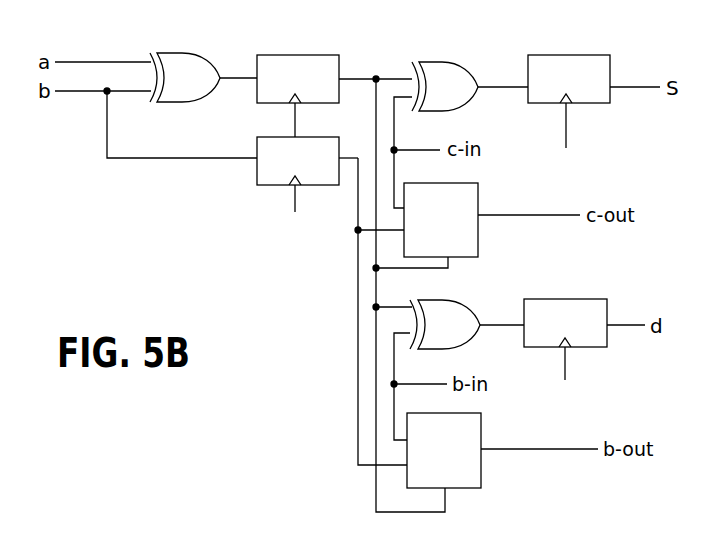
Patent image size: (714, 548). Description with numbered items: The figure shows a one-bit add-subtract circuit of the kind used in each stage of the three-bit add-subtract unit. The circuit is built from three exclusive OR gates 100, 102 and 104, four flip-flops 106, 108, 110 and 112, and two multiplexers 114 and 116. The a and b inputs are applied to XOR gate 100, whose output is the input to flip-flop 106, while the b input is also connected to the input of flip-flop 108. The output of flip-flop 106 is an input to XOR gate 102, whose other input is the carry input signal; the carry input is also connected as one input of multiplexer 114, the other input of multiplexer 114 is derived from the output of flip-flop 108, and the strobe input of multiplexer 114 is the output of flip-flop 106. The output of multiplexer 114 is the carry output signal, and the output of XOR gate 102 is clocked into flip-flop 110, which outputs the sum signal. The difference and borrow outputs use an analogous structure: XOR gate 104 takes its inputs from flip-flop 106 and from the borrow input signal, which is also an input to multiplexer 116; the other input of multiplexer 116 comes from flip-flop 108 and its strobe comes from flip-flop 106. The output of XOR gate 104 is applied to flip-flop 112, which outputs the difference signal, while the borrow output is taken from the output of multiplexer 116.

The exclusive OR gate 100 is at (187, 53).
The exclusive OR gate 102 is at (462, 62).
The exclusive OR gate 104 is at (461, 302).
The flip-flop 106 is at (305, 55).
The flip-flop 108 is at (261, 186).
The flip-flop 110 is at (566, 55).
The flip-flop 112 is at (550, 299).
The multiplexer 114 is at (483, 200).
The multiplexer 116 is at (483, 432).